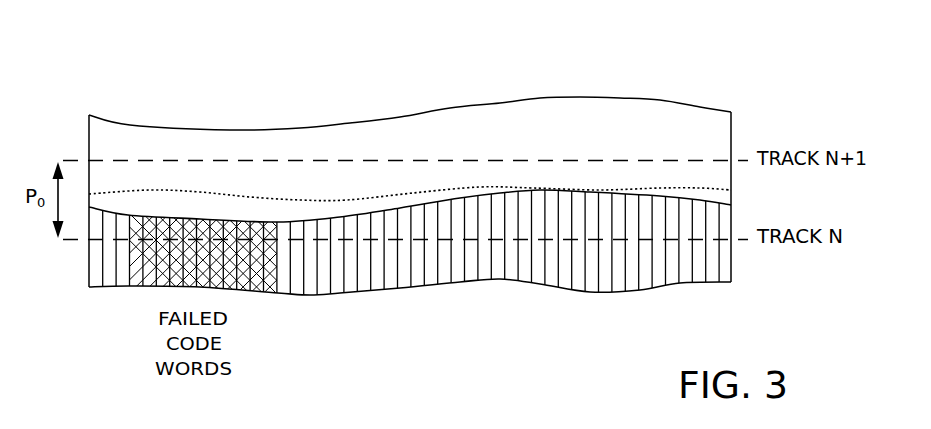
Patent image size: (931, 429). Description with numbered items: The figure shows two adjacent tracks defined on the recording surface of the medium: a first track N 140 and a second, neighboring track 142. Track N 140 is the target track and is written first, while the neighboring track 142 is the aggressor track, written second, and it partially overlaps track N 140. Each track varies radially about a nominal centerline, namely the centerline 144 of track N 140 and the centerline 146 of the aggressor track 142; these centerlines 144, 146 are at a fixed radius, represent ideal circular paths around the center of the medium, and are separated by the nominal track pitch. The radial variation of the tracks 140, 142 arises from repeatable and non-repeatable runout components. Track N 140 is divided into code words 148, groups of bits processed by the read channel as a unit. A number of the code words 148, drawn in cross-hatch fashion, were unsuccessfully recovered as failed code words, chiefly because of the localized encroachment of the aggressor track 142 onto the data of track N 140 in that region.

The track N 140 is at (700, 309).
The track N+1 142 is at (712, 89).
The nominal centerline of track N 144 is at (56, 240).
The nominal centerline of track N+1 146 is at (56, 160).
The code words 148 is at (405, 283).